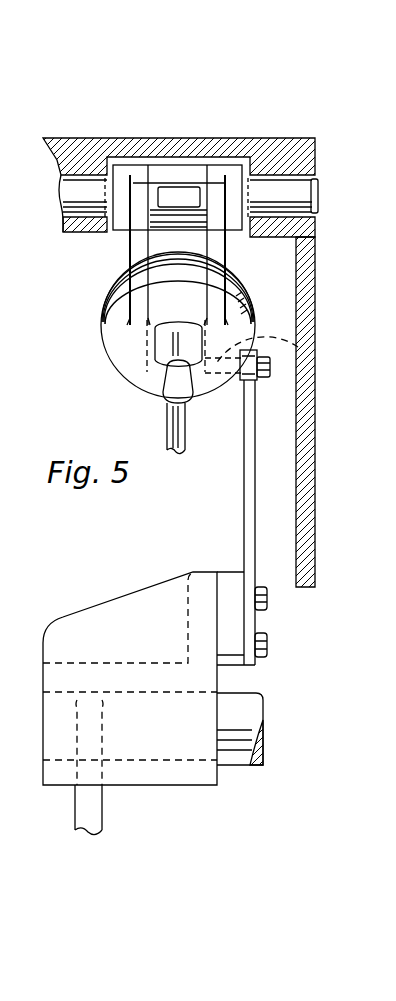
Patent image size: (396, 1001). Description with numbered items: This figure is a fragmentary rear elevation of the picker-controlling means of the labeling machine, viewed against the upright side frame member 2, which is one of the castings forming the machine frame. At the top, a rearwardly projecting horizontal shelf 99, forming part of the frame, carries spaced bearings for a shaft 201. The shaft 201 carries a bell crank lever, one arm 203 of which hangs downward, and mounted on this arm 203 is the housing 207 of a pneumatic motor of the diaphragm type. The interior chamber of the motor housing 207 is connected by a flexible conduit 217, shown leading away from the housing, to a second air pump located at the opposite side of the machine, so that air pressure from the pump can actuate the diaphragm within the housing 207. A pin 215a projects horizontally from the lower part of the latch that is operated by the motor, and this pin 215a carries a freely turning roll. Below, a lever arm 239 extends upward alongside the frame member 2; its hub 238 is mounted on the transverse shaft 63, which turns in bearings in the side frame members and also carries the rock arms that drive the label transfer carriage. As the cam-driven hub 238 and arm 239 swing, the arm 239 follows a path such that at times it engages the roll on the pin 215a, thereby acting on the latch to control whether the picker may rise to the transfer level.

The shelf 99 is at (228, 140).
The shaft 201 is at (307, 195).
The arm 203 is at (213, 243).
The housing 207 is at (233, 313).
The pin 215a is at (360, 345).
The flexible conduit 217 is at (183, 425).
The side frame member 2 is at (306, 462).
The lever arm 239 is at (244, 497).
The hub 238 is at (233, 675).
The transverse shaft 63 is at (248, 713).